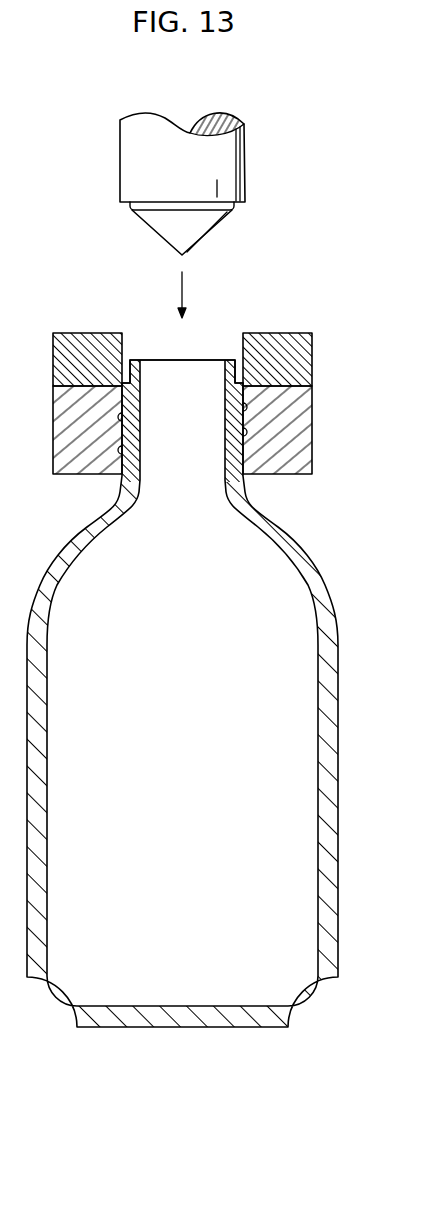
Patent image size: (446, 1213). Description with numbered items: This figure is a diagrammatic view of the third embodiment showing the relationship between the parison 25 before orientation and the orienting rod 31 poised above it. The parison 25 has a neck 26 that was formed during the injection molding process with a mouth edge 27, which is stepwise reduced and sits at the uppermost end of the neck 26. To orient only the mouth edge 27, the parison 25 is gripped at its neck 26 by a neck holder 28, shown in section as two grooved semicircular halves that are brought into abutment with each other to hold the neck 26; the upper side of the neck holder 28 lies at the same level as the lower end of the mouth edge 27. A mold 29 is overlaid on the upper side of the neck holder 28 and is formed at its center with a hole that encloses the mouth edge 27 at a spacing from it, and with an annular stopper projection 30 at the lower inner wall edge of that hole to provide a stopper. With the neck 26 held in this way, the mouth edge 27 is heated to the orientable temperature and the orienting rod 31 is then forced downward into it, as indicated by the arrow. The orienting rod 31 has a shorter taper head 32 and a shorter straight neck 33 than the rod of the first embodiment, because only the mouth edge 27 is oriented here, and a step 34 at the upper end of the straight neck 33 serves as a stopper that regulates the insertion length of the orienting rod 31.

The parison 25 is at (332, 589).
The neck 26 is at (133, 437).
The mouth edge 27 is at (196, 402).
The neck holder 28 is at (282, 466).
The mold 29 is at (67, 345).
The annular stopper projection 30 is at (130, 358).
The orienting rod 31 is at (251, 142).
The taper head 32 is at (175, 247).
The straight neck 33 is at (205, 212).
The step 34 is at (236, 209).